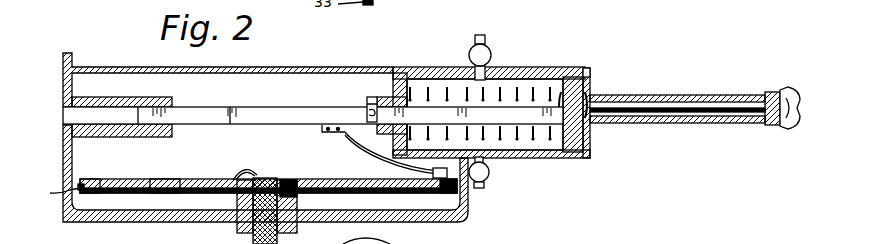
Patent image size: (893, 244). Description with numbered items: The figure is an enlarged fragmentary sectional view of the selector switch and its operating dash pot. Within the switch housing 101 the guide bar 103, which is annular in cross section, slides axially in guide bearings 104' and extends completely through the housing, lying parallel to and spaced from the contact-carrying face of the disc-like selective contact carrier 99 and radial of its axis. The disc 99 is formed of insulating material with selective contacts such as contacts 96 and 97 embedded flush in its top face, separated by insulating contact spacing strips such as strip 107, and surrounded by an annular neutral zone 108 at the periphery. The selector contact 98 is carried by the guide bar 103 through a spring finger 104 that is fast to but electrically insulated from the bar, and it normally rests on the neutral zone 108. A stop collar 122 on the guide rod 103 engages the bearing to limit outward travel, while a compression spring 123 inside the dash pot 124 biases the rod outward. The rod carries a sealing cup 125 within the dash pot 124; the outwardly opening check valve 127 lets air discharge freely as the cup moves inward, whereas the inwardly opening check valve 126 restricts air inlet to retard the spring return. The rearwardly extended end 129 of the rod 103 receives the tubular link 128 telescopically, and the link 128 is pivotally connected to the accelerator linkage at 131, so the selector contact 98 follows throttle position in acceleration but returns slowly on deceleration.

The selective contact 96 is at (217, 180).
The selective contact 97 is at (163, 180).
The selector contact 98 is at (442, 184).
The selective contact carrier 99 is at (56, 195).
The switch housing 101 is at (463, 212).
The guide bar 103 is at (258, 117).
The spring finger 104 is at (382, 151).
The guide bearings 104' is at (239, 114).
The contact spacing strip 107 is at (203, 173).
The neutral zone 108 is at (95, 180).
The stop collar 122 is at (368, 114).
The compression spring 123 is at (502, 92).
The dash pot 124 is at (565, 72).
The sealing cup 125 is at (589, 82).
The inwardly opening check valve 126 is at (497, 28).
The outwardly opening check valve 127 is at (485, 190).
The tubular link 128 is at (636, 123).
The rearwardly extended end 129 is at (695, 123).
The pivotal connection 131 is at (786, 126).